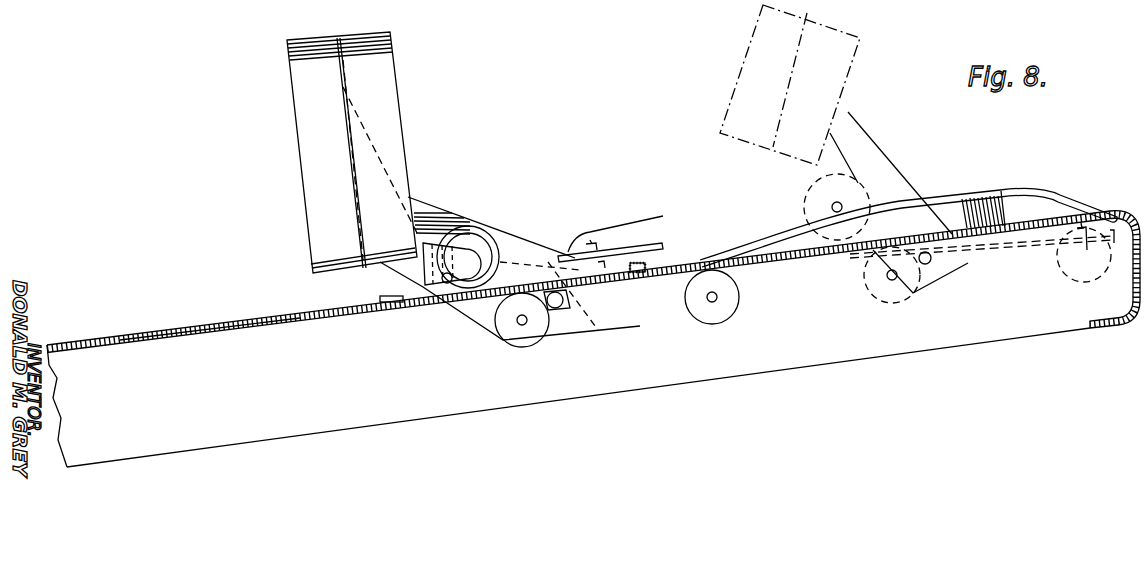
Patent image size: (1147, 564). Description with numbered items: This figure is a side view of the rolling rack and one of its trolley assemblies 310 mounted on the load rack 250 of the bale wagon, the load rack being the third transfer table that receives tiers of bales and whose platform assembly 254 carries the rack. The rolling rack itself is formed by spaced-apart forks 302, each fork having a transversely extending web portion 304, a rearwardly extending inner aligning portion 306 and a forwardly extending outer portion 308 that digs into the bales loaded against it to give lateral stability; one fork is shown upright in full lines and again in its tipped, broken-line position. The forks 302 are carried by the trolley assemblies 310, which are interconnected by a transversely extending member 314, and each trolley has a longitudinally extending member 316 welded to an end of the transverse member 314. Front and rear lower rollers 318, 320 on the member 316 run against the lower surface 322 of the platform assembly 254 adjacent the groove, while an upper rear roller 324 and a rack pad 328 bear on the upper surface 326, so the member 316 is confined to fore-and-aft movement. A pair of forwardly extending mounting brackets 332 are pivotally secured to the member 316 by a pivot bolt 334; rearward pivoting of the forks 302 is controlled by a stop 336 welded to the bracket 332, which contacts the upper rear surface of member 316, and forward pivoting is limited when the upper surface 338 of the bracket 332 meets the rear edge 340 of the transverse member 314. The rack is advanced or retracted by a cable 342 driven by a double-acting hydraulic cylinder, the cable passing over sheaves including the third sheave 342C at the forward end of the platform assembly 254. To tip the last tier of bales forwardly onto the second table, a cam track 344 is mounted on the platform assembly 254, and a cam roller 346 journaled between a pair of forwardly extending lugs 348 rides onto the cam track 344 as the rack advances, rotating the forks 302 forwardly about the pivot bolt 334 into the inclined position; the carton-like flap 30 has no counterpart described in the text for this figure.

The carton flap 30 is at (378, 143).
The load rack 250 is at (632, 0).
The platform assembly 254 is at (196, 450).
The fork 302 is at (341, 185).
The web portion 304 is at (347, 142).
The inner aligning portion 306 is at (302, 96).
The outer portion 308 is at (380, 93).
The trolley assembly 310 is at (590, 352).
The transverse member 314 is at (624, 248).
The longitudinal member 316 is at (580, 227).
The front lower roller 318 is at (716, 323).
The rear lower roller 320 is at (517, 347).
The lower surface 322 is at (254, 333).
The upper rear roller 324 is at (482, 250).
The upper surface 326 is at (124, 337).
The rack pad 328 is at (645, 265).
The mounting bracket 332 is at (533, 253).
The pivot bolt 334 is at (566, 309).
The stop 336 is at (430, 213).
The upper surface of bracket 338 is at (457, 220).
The rear edge 340 is at (636, 229).
The cable 342 is at (394, 300).
The third sheave 342C is at (1110, 214).
The cam track 344 is at (977, 193).
The cam roller 346 is at (423, 288).
The lug 348 is at (437, 237).